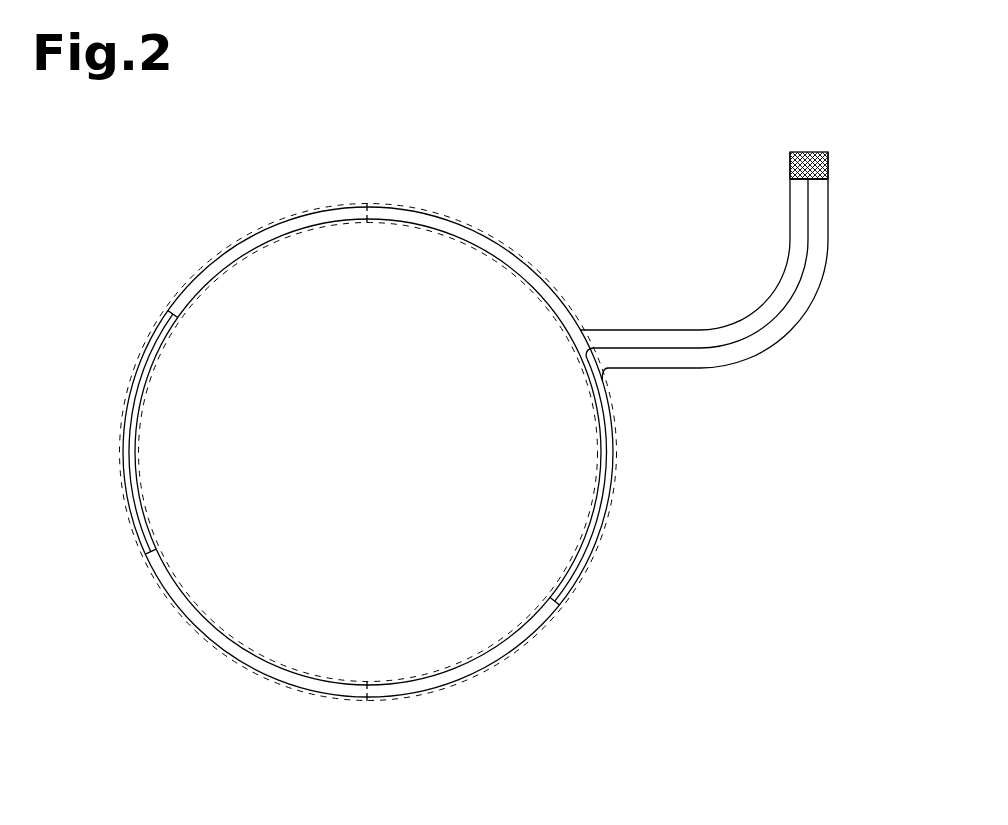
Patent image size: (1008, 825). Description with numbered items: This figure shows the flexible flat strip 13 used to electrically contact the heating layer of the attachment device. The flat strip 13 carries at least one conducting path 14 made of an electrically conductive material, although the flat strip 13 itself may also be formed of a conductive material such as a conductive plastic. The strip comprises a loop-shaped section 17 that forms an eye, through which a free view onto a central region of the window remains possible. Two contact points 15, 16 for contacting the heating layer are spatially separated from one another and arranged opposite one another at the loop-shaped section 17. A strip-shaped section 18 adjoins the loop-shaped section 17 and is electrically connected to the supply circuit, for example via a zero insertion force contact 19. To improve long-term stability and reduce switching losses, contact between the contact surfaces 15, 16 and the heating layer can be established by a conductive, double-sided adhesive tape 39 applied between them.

The flexible flat strip 13 is at (490, 172).
The conducting path 14 is at (626, 352).
The contact point 15 is at (610, 487).
The contact point 16 is at (130, 392).
The loop-shaped section 17 is at (332, 280).
The strip-shaped section 18 is at (846, 334).
The zero insertion force contact 19 is at (790, 157).
The conductive double-sided adhesive tape 39 is at (400, 695).